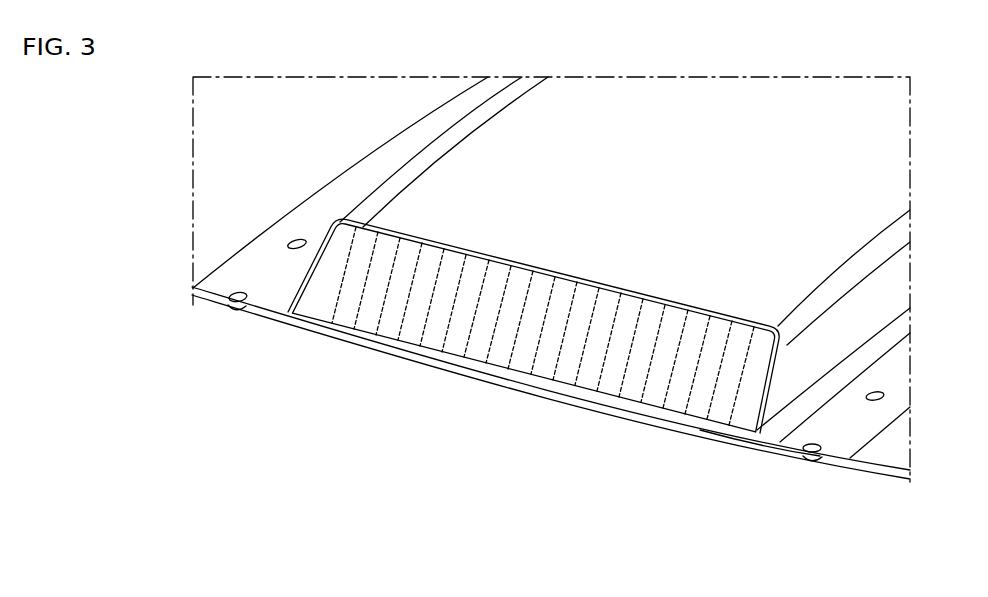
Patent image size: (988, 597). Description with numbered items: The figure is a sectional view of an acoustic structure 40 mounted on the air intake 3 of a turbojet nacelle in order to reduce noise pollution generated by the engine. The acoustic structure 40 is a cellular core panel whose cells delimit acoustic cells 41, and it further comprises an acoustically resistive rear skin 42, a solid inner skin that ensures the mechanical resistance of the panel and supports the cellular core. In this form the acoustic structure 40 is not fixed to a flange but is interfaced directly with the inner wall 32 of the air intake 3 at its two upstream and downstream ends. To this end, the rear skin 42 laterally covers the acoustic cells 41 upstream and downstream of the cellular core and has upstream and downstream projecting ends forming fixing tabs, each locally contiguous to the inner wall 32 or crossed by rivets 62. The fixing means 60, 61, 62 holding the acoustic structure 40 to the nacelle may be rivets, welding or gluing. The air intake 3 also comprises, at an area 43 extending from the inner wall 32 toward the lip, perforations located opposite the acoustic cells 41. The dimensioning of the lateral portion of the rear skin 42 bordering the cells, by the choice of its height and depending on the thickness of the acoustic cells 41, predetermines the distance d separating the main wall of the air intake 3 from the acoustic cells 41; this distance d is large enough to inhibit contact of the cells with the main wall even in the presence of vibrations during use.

The air intake 3 is at (203, 199).
The inner wall 32 is at (730, 437).
The acoustic structure 40 is at (533, 247).
The acoustic cells 41 is at (615, 368).
The acoustically resistive rear skin 42 is at (657, 298).
The area 43 is at (516, 415).
The fixing means 60 is at (302, 195).
The fixing means 61 is at (806, 461).
The rivets 62 is at (232, 310).
The distance d is at (470, 325).